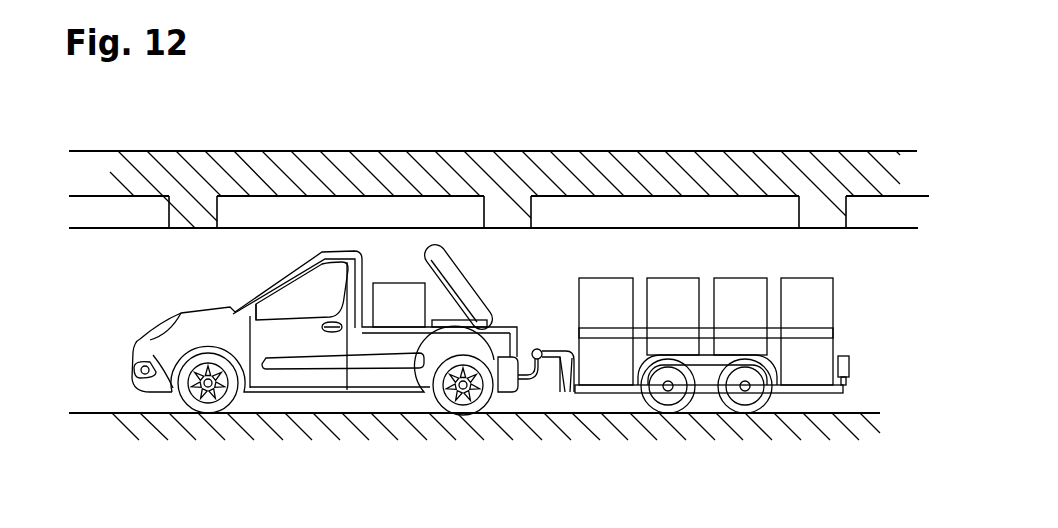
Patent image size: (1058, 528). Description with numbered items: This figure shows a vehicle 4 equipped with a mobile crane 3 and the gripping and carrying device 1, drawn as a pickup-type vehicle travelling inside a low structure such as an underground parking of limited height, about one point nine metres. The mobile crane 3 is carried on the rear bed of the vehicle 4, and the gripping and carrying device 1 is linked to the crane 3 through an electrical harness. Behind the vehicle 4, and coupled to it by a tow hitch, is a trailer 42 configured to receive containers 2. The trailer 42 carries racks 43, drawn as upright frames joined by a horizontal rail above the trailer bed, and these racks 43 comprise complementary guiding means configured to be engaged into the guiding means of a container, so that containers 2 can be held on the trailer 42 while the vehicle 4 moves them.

The gripping and carrying device 1 is at (477, 279).
The containers 2 is at (847, 300).
The mobile crane 3 is at (413, 262).
The vehicle 4 is at (173, 301).
The trailer 42 is at (818, 397).
The racks 43 is at (638, 330).